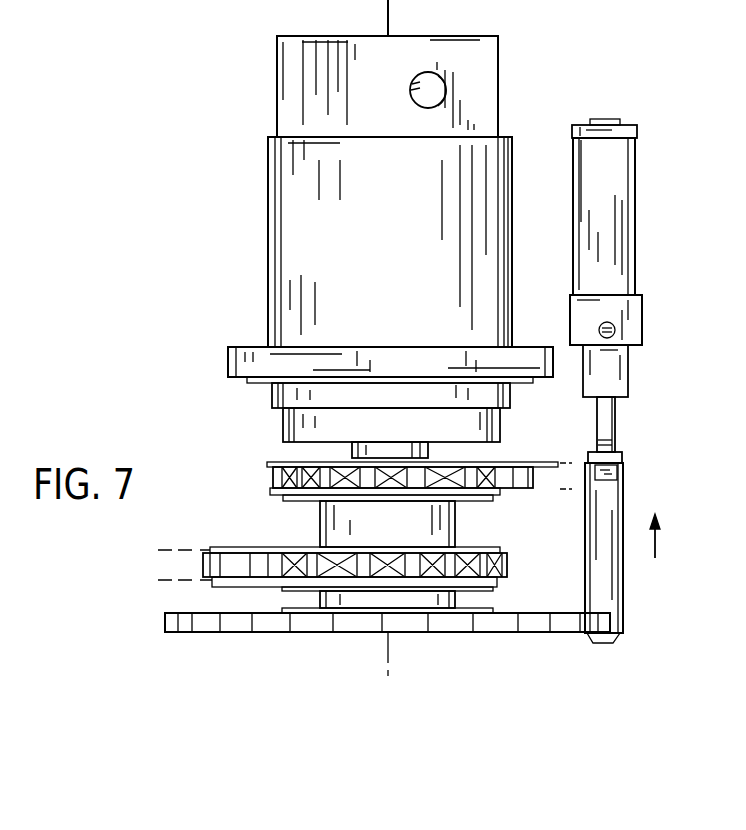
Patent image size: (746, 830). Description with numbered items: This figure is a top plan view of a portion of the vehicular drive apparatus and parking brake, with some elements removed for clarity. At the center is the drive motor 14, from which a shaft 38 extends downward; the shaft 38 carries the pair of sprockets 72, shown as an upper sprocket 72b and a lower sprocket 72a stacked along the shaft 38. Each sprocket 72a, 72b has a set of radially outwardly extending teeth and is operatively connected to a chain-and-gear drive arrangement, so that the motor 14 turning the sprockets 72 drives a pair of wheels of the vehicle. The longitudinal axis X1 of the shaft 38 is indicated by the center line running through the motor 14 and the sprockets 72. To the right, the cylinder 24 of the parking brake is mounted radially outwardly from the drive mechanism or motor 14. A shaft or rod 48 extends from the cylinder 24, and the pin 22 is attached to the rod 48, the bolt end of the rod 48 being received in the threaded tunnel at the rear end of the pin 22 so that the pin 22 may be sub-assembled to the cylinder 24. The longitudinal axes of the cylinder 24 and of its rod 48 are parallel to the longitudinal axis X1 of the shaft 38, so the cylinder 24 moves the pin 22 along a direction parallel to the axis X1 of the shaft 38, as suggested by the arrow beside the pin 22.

The drive motor 14 is at (300, 205).
The cylinder 24 is at (615, 213).
The shaft 38 is at (352, 452).
The sprockets 72 is at (365, 511).
The sprocket 72a is at (493, 542).
The sprocket 72b is at (498, 462).
The shaft or rod of cylinder 48 is at (612, 428).
The pin 22 is at (610, 600).
The longitudinal axis of shaft X1 is at (390, 643).